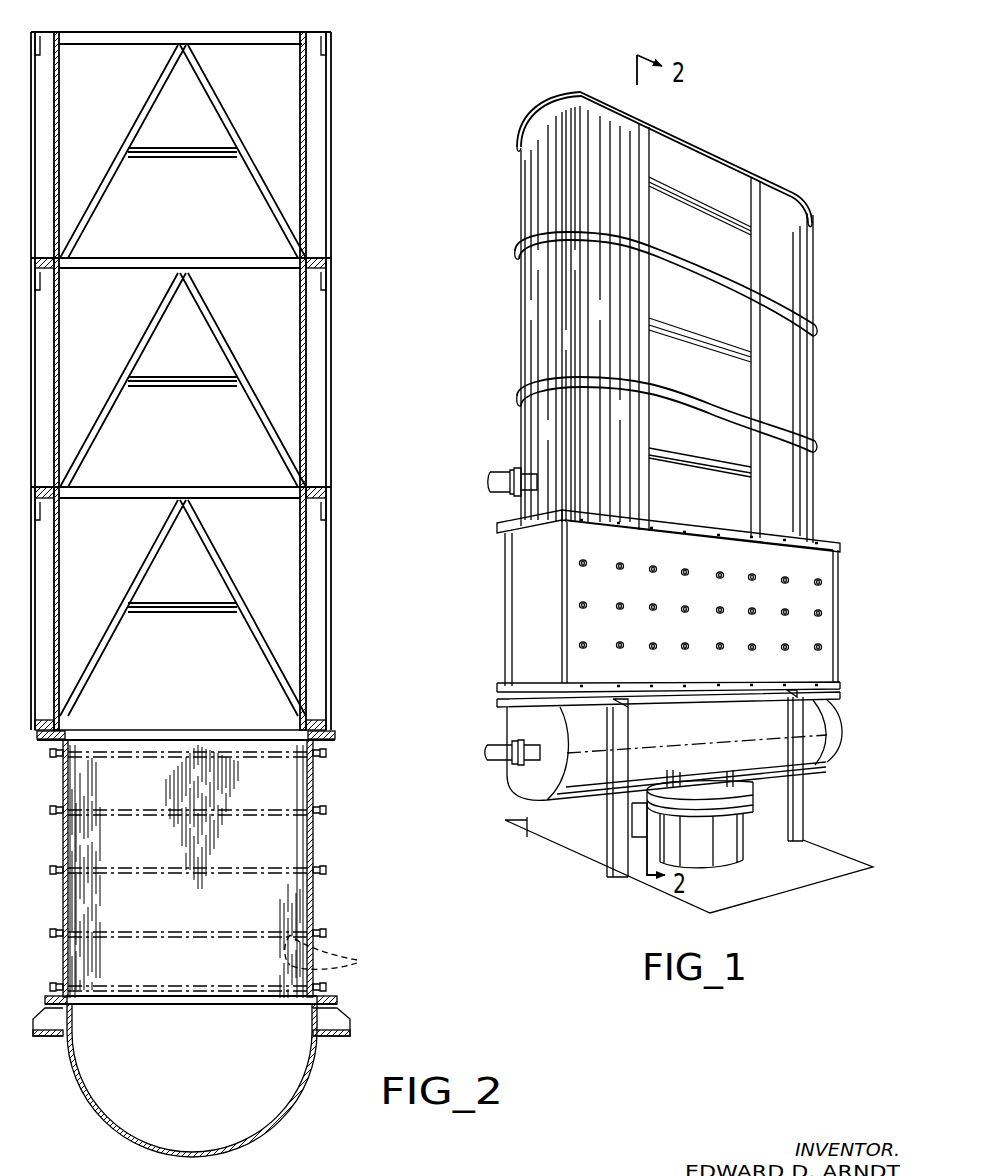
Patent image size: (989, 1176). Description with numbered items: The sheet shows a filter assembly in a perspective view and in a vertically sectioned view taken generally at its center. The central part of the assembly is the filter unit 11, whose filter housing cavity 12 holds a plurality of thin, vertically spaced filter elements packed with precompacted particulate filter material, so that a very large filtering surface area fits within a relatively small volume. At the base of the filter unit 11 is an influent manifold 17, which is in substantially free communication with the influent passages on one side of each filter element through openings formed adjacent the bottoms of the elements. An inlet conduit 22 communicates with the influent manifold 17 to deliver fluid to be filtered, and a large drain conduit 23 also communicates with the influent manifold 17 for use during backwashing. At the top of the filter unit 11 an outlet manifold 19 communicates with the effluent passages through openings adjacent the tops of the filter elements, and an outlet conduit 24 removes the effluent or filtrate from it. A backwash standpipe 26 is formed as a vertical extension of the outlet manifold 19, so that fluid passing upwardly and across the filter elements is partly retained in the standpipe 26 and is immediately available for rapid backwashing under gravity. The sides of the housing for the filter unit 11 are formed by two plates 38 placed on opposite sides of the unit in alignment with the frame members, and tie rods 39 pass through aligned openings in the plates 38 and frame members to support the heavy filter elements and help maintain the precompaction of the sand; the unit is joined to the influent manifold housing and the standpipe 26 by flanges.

In FIG. 2, the filter unit 11 is at (316, 840).
In FIG. 1, the filter unit 11 is at (838, 619).
In FIG. 2, the filter housing cavity 12 is at (300, 905).
In FIG. 2, the influent manifold 17 is at (184, 1083).
In FIG. 2, the outlet manifold 19 is at (286, 716).
In FIG. 1, the inlet conduit 22 is at (507, 762).
In FIG. 1, the drain conduit 23 is at (738, 836).
In FIG. 1, the outlet conduit 24 is at (497, 476).
In FIG. 2, the backwash standpipe 26 is at (332, 378).
In FIG. 1, the backwash standpipe 26 is at (540, 305).
In FIG. 2, the plates 38 is at (63, 800).
In FIG. 1, the plates 38 is at (686, 601).
In FIG. 2, the tie rods 39 is at (332, 956).